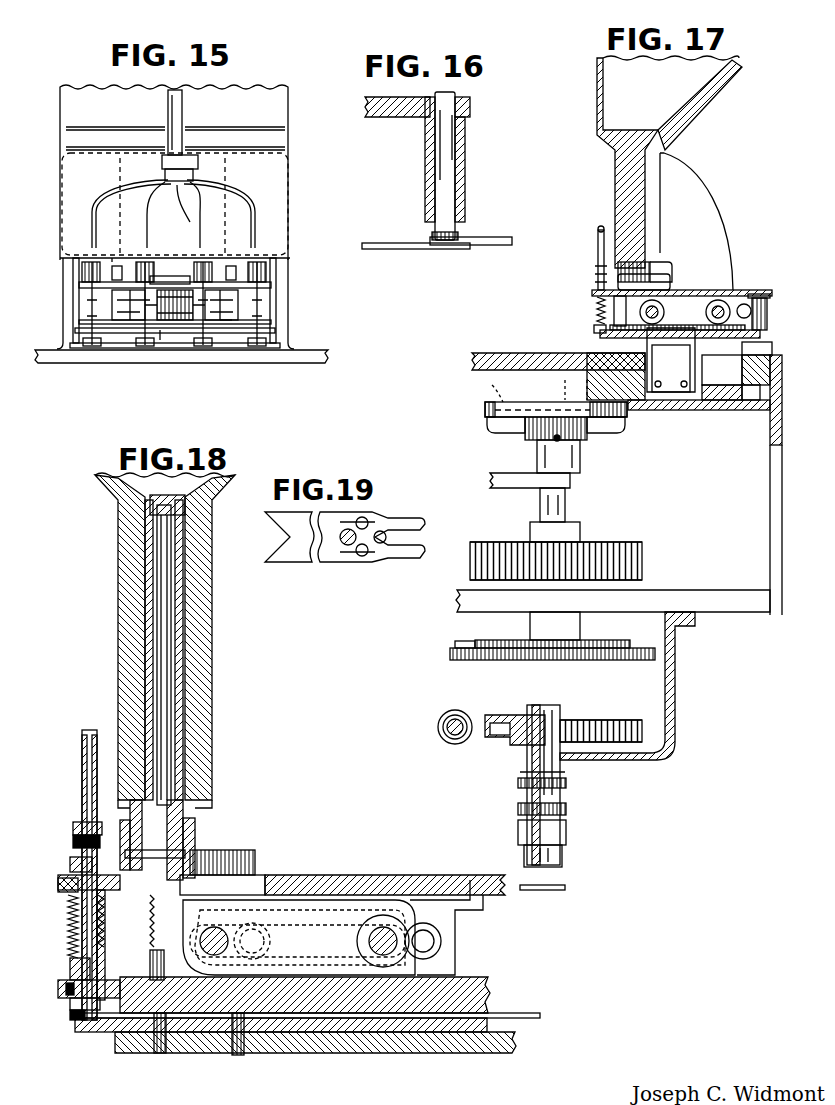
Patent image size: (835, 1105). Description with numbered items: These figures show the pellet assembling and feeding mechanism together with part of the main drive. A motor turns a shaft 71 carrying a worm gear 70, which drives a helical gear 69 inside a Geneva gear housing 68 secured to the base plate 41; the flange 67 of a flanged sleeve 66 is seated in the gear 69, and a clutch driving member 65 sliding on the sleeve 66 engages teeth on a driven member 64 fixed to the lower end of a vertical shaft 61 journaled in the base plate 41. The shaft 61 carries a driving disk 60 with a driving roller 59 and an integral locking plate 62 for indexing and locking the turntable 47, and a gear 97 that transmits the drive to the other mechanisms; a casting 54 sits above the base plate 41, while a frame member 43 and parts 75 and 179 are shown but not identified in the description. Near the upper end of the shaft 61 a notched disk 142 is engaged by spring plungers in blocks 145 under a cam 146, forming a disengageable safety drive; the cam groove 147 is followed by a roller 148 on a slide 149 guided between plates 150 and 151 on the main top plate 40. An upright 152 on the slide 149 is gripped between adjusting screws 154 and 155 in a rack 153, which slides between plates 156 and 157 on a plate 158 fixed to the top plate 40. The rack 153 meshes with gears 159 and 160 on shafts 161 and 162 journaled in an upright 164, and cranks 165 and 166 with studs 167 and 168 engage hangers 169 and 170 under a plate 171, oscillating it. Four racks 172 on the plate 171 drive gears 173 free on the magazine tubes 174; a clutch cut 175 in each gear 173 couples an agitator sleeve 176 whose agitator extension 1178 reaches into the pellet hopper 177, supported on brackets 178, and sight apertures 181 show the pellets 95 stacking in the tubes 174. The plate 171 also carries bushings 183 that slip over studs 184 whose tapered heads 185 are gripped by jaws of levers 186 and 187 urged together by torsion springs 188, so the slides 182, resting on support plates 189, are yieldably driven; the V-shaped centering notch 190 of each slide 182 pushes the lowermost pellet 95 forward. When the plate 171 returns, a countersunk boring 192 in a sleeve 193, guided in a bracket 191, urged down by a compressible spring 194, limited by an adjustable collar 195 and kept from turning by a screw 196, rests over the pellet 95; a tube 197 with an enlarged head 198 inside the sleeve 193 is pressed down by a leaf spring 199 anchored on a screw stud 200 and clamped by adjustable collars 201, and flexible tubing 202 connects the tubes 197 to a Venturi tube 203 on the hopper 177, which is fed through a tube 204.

In FIG. 15, the main top plate 40 is at (325, 350).
In FIG. 17, the main top plate 40 is at (565, 360).
In FIG. 17, the base plate 41 is at (705, 605).
In FIG. 17, the wall 43 is at (770, 484).
In FIG. 17, the turntable 47 is at (505, 358).
In FIG. 17, the casting 54 is at (570, 480).
In FIG. 17, the driving roller 59 is at (455, 642).
In FIG. 17, the driving disk 60 is at (452, 655).
In FIG. 17, the shaft 61 is at (565, 507).
In FIG. 17, the locking plate 62 is at (512, 644).
In FIG. 17, the driven member 64 is at (562, 846).
In FIG. 17, the clutch driving member 65 is at (566, 818).
In FIG. 17, the flanged sleeve 66 is at (528, 780).
In FIG. 17, the flange 67 is at (525, 718).
In FIG. 17, the Geneva gear housing 68 is at (676, 745).
In FIG. 17, the helical gear 69 is at (608, 728).
In FIG. 17, the worm gear 70 is at (437, 727).
In FIG. 17, the shaft 71 is at (458, 714).
In FIG. 17, the collar 75 is at (566, 790).
In FIG. 18, the pellets 95 is at (150, 955).
In FIG. 17, the gear 97 is at (614, 548).
In FIG. 17, the disk 142 is at (530, 432).
In FIG. 17, the blocks 145 is at (488, 428).
In FIG. 17, the cam 146 is at (486, 409).
In FIG. 17, the cam groove 147 is at (480, 388).
In FIG. 17, the roller 148 is at (562, 400).
In FIG. 17, the slide 149 is at (718, 400).
In FIG. 17, the plate 150 is at (712, 402).
In FIG. 17, the plate 151 is at (748, 400).
In FIG. 17, the upright 152 is at (665, 408).
In FIG. 15, the rack 153 is at (185, 335).
In FIG. 17, the rack 153 is at (671, 359).
In FIG. 17, the adjusting screw 154 is at (594, 326).
In FIG. 17, the adjusting screw 155 is at (772, 348).
In FIG. 15, the plate 156 is at (255, 330).
In FIG. 18, the plate 156 is at (490, 992).
In FIG. 15, the plate 157 is at (76, 334).
In FIG. 15, the plate 158 is at (190, 348).
In FIG. 17, the plate 158 is at (671, 368).
In FIG. 18, the plate 158 is at (208, 1053).
In FIG. 17, the gear 159 is at (728, 305).
In FIG. 15, the gear 160 is at (180, 322).
In FIG. 17, the gear 160 is at (652, 300).
In FIG. 18, the shaft 161 is at (369, 941).
In FIG. 18, the shaft 162 is at (230, 941).
In FIG. 17, the upright 164 is at (698, 325).
In FIG. 18, the upright 164 is at (335, 900).
In FIG. 18, the crank 165 is at (430, 900).
In FIG. 15, the crank 166 is at (225, 325).
In FIG. 18, the crank 166 is at (268, 928).
In FIG. 18, the stud 167 is at (441, 940).
In FIG. 18, the stud 168 is at (262, 955).
In FIG. 15, the hanger 169 is at (240, 320).
In FIG. 15, the hanger 170 is at (115, 296).
In FIG. 17, the hanger 170 is at (770, 296).
In FIG. 18, the hanger 170 is at (455, 960).
In FIG. 15, the plate 171 is at (270, 286).
In FIG. 16, the plate 171 is at (410, 110).
In FIG. 17, the plate 171 is at (594, 290).
In FIG. 18, the plate 171 is at (378, 874).
In FIG. 15, the racks 172 is at (165, 276).
In FIG. 17, the racks 172 is at (650, 282).
In FIG. 18, the racks 172 is at (252, 858).
In FIG. 15, the gears 173 is at (85, 262).
In FIG. 17, the gears 173 is at (645, 265).
In FIG. 18, the gears 173 is at (198, 826).
In FIG. 18, the magazine tube 174 is at (195, 855).
In FIG. 18, the clutch cut 175 is at (185, 805).
In FIG. 18, the agitator sleeve 176 is at (148, 610).
In FIG. 15, the pellet hopper 177 is at (285, 116).
In FIG. 17, the pellet hopper 177 is at (603, 130).
In FIG. 18, the pellet hopper 177 is at (118, 578).
In FIG. 15, the brackets 178 is at (73, 262).
In FIG. 17, the brackets 178 is at (672, 155).
In FIG. 18, the agitator extension 1178 is at (155, 502).
In FIG. 18, the slide 179 is at (262, 874).
In FIG. 18, the sight apertures 181 is at (148, 915).
In FIG. 15, the slide 182 is at (100, 348).
In FIG. 16, the slide 182 is at (420, 250).
In FIG. 18, the slide 182 is at (540, 1013).
In FIG. 19, the slide 182 is at (300, 562).
In FIG. 16, the bushing 183 is at (462, 128).
In FIG. 17, the bushing 183 is at (767, 316).
In FIG. 16, the stud 184 is at (448, 165).
In FIG. 16, the tapered head 185 is at (436, 235).
In FIG. 19, the tapered head 185 is at (348, 548).
In FIG. 16, the lever 186 is at (510, 220).
In FIG. 19, the lever 186 is at (385, 515).
In FIG. 19, the lever 187 is at (385, 565).
In FIG. 19, the torsion springs 188 is at (388, 534).
In FIG. 15, the support plate 189 is at (92, 346).
In FIG. 17, the support plate 189 is at (600, 334).
In FIG. 18, the support plate 189 is at (112, 1032).
In FIG. 19, the centering notch 190 is at (268, 520).
In FIG. 15, the bracket 191 is at (268, 322).
In FIG. 18, the bracket 191 is at (60, 990).
In FIG. 18, the countersunk boring 192 is at (70, 1018).
In FIG. 17, the sleeve 193 is at (597, 302).
In FIG. 18, the sleeve 193 is at (70, 968).
In FIG. 18, the compressible spring 194 is at (68, 920).
In FIG. 18, the adjustable collar 195 is at (60, 880).
In FIG. 18, the screw 196 is at (62, 892).
In FIG. 18, the tube 197 is at (82, 950).
In FIG. 18, the enlarged head 198 is at (70, 1006).
In FIG. 15, the leaf spring 199 is at (110, 258).
In FIG. 18, the leaf spring 199 is at (73, 840).
In FIG. 15, the screw stud 200 is at (106, 210).
In FIG. 18, the adjustable collars 201 is at (74, 824).
In FIG. 15, the flexible tubing 202 is at (125, 175).
In FIG. 17, the flexible tubing 202 is at (599, 230).
In FIG. 18, the flexible tubing 202 is at (82, 732).
In FIG. 15, the Venturi tube 203 is at (182, 107).
In FIG. 15, the tube 204 is at (185, 222).